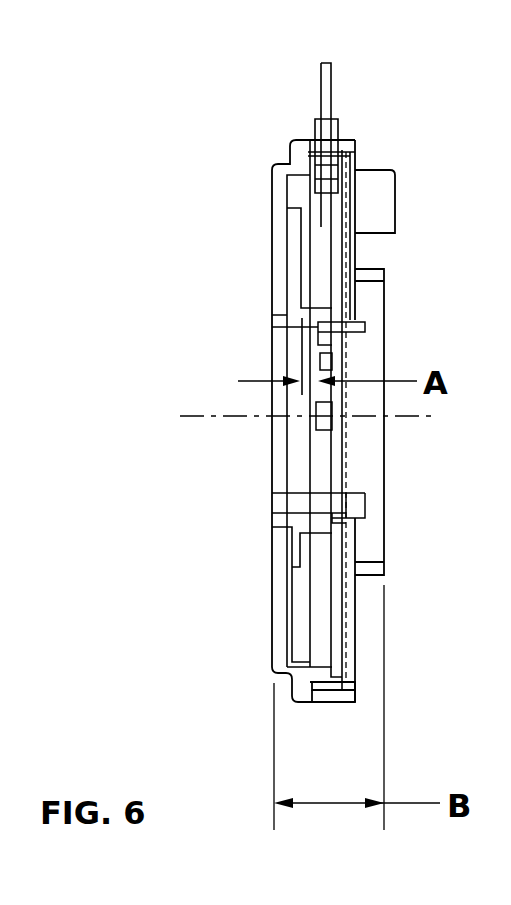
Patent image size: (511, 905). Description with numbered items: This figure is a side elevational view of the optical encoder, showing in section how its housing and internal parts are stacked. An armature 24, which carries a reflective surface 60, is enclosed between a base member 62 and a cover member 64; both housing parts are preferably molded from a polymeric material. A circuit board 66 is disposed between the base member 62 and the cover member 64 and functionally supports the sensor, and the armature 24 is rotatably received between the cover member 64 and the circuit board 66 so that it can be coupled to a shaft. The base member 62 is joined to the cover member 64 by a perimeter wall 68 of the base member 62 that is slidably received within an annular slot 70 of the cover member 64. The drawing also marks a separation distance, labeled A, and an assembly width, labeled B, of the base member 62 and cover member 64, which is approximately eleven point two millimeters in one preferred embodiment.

The armature 24 is at (295, 268).
The reflective surface 60 is at (302, 251).
The base member 62 is at (352, 182).
The cover member 64 is at (278, 634).
The circuit board 66 is at (337, 440).
The perimeter wall 68 is at (334, 690).
The annular slot 70 is at (317, 690).